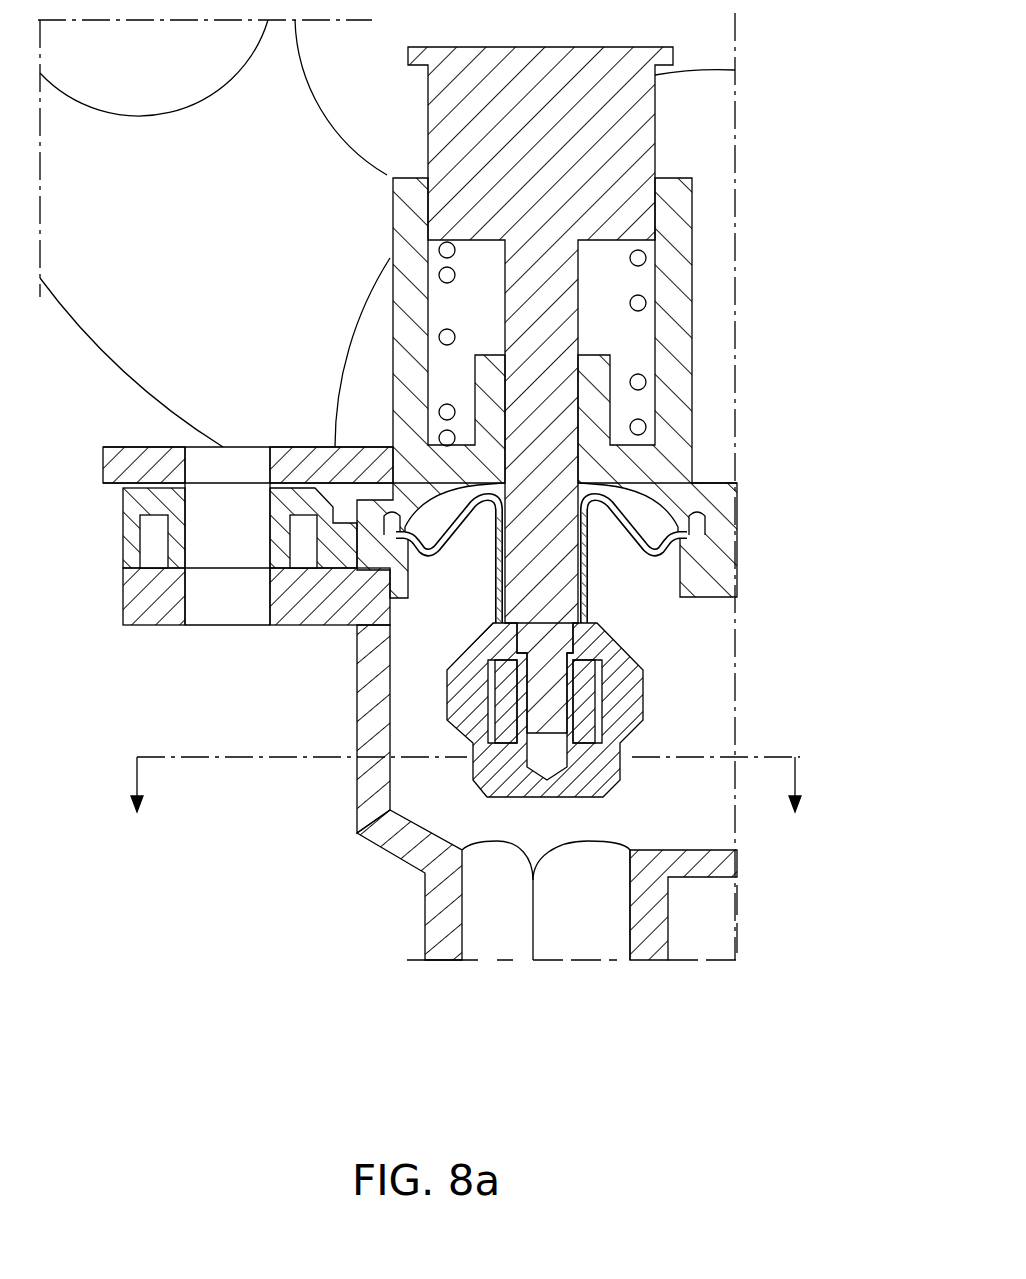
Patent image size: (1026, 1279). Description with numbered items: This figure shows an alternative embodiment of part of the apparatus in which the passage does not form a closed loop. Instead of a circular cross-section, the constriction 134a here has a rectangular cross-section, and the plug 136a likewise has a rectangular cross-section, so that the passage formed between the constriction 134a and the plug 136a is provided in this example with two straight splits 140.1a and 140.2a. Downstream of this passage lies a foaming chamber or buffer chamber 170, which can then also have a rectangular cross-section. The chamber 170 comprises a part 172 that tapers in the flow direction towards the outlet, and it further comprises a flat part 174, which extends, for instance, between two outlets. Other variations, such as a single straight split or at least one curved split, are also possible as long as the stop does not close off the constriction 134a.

The foaming chamber or buffer chamber 170 is at (378, 702).
The part tapering in the flow direction towards the outlet 172 is at (408, 847).
The plug 136a is at (503, 782).
The straight split 140.1a is at (473, 827).
The straight split 140.2a is at (627, 812).
The constriction 134a is at (535, 888).
The flat part 174 is at (705, 865).